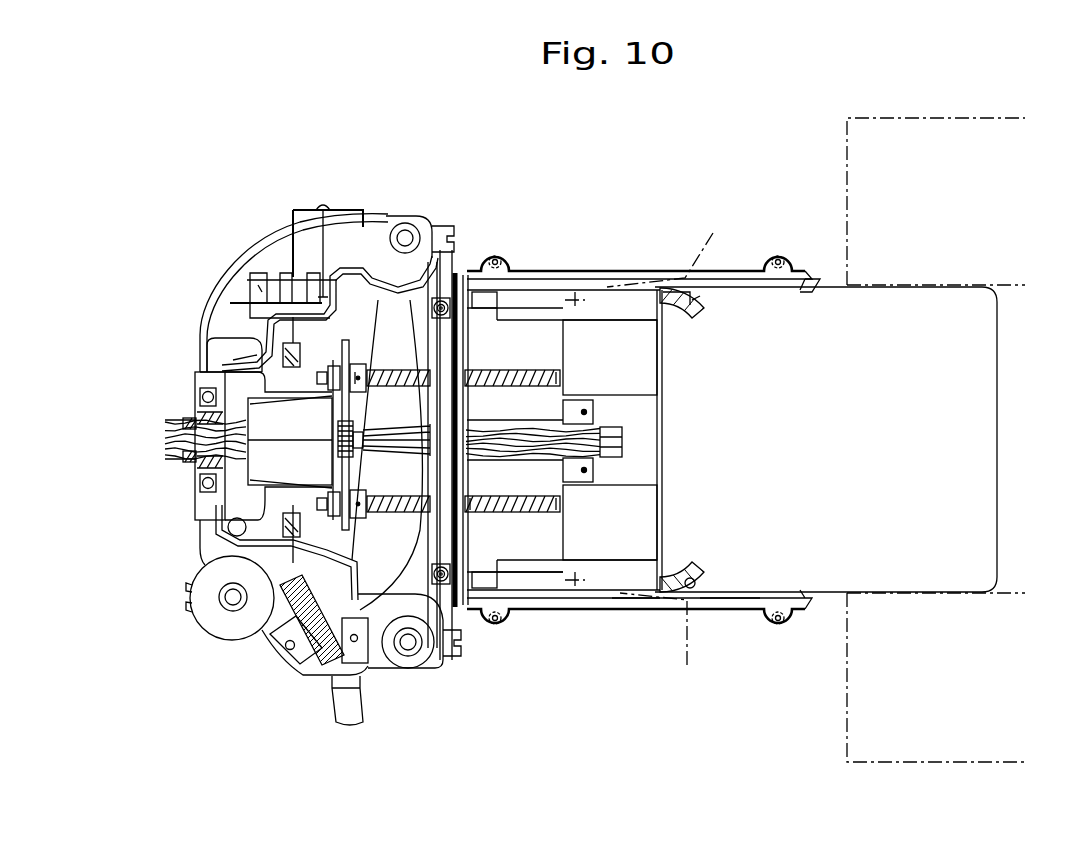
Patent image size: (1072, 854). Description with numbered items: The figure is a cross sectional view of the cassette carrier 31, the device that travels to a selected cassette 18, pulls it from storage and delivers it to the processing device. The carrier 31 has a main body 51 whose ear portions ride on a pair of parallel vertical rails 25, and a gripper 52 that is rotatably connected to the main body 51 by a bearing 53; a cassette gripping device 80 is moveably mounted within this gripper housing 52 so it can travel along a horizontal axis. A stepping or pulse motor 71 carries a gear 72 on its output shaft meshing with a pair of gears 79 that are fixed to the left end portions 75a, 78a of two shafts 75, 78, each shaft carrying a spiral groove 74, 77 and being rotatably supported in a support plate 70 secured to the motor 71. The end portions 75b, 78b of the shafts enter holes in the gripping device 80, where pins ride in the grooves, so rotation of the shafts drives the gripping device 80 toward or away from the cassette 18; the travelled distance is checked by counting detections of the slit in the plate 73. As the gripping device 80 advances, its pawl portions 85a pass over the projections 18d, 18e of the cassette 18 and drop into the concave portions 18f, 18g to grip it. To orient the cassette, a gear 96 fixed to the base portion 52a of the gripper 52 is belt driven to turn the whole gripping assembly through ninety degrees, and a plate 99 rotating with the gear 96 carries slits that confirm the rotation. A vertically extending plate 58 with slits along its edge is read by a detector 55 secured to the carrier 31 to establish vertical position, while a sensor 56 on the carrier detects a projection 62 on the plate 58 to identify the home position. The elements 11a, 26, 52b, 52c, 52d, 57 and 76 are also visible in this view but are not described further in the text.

The housing wall 11a is at (222, 385).
The cassette 18 is at (966, 349).
The projection 18d is at (677, 324).
The projection 18e is at (677, 560).
The concave portion 18f is at (690, 296).
The concave portion 18g is at (688, 580).
The rail 25 is at (412, 231).
The motor shaft hub 26 is at (233, 598).
The cassette carrier 31 is at (554, 264).
The main body 51 is at (301, 680).
The gripper 52 is at (797, 627).
The base portion 52a is at (267, 377).
The frame upper flange 52b is at (785, 292).
The frame lower web 52c is at (647, 612).
The frame lower flange 52d is at (741, 612).
The bearing 53 is at (197, 486).
The detector 55 is at (306, 290).
The sensor 56 is at (256, 276).
The bracket 57 is at (293, 208).
The vertically extending plate 58 is at (325, 210).
The projection 62 is at (250, 270).
The support plate 70 is at (293, 505).
The stepping or pulse motor 71 is at (267, 430).
The gear 72 is at (192, 463).
The plate 73 is at (356, 462).
The spiral groove 74 is at (545, 374).
The shaft 75 is at (516, 368).
The left end portion 75a is at (367, 370).
The end portion 75b is at (560, 380).
The housing rib 76 is at (283, 372).
The spiral groove 77 is at (478, 514).
The shaft 78 is at (520, 514).
The left end portion 78a is at (300, 630).
The end portion 78b is at (557, 514).
The gear 79 is at (290, 617).
The cassette gripping device 80 is at (607, 575).
The pawl portion 85a is at (675, 449).
The gear 96 is at (300, 560).
The plate 99 is at (290, 600).